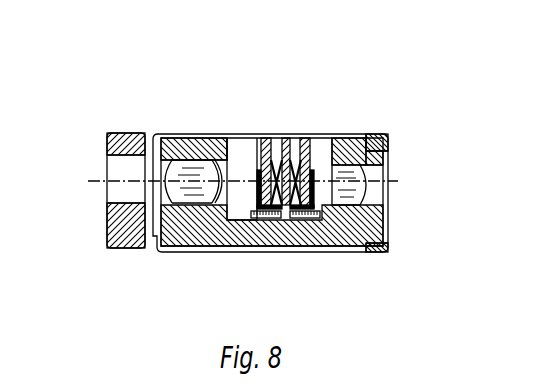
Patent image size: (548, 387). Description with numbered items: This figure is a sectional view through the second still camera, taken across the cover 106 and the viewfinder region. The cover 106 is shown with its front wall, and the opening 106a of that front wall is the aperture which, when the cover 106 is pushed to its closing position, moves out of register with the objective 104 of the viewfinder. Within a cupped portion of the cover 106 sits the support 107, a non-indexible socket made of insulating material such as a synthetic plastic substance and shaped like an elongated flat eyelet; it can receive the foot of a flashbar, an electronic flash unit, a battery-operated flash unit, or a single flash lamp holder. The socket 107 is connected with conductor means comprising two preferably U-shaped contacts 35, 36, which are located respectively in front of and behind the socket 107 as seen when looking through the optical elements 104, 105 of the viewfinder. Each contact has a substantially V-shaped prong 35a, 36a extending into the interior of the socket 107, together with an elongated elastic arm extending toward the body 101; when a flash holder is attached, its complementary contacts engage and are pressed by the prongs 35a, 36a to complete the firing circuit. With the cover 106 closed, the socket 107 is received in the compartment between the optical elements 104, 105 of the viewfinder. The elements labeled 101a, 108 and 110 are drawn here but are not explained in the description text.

The body 101 is at (385, 218).
The end cover 101a is at (118, 240).
The objective of the viewfinder 104 is at (366, 174).
The optical element of the viewfinder 105 is at (199, 176).
The cover 106 is at (378, 253).
The opening of the front wall 106a is at (386, 250).
The contact 36 is at (249, 175).
The V-shaped prong 36a is at (268, 150).
The support 107 is at (302, 166).
The clamping plate 110 is at (322, 150).
The spring 108 is at (311, 140).
The contact 35 is at (320, 148).
The V-shaped prong 35a is at (279, 219).